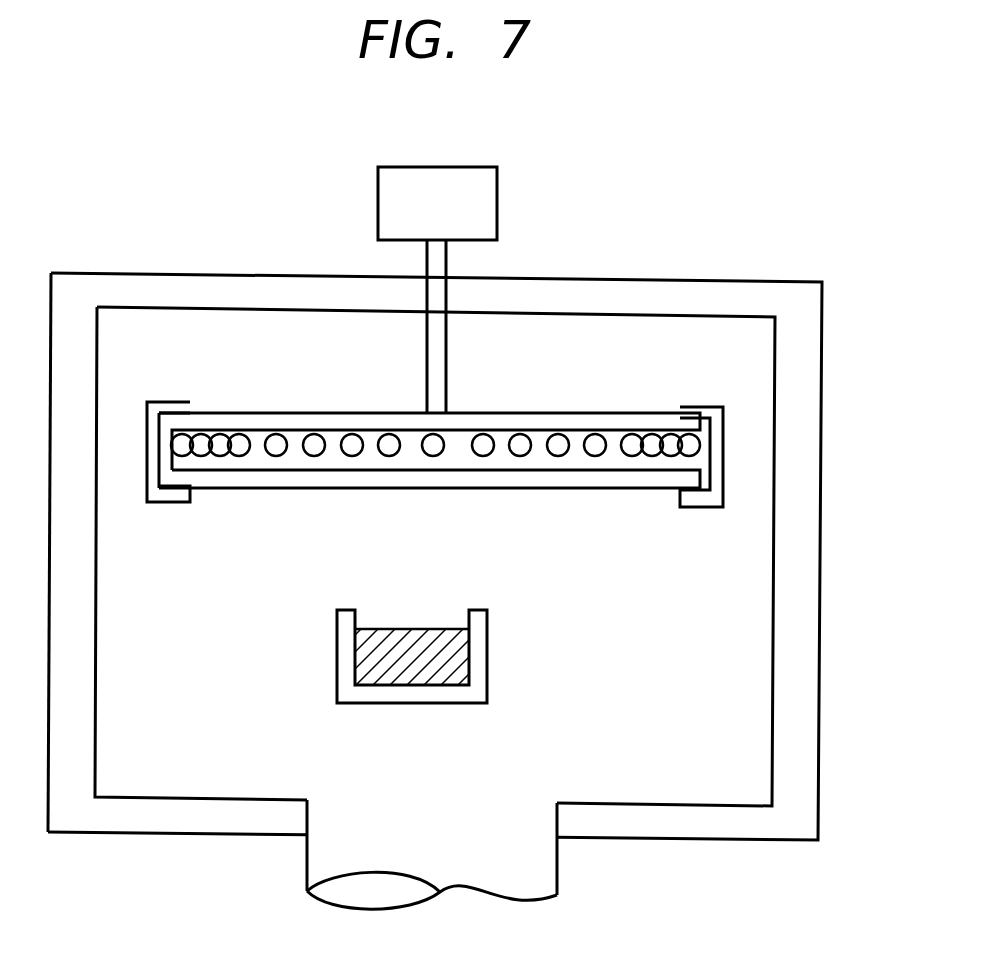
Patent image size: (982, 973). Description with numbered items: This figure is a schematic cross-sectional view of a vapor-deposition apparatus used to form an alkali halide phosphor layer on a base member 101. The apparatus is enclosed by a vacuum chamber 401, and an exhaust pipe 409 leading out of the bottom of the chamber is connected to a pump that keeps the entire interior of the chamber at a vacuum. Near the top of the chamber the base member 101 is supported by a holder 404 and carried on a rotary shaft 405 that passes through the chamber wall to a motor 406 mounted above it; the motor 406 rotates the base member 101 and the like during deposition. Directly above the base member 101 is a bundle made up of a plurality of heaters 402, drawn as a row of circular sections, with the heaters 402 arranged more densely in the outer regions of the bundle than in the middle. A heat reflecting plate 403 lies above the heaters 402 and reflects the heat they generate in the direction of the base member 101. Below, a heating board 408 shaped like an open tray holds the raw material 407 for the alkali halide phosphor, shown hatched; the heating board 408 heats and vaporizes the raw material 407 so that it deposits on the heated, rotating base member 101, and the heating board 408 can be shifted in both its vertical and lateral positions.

The base member 101 is at (558, 482).
The vacuum chamber 401 is at (802, 717).
The heater 402 is at (635, 447).
The heat reflecting plate 403 is at (538, 423).
The holder 404 is at (705, 412).
The rotary shaft 405 is at (435, 297).
The motor 406 is at (457, 172).
The raw material 407 is at (413, 640).
The heating board 408 is at (347, 663).
The exhaust pipe 409 is at (545, 868).